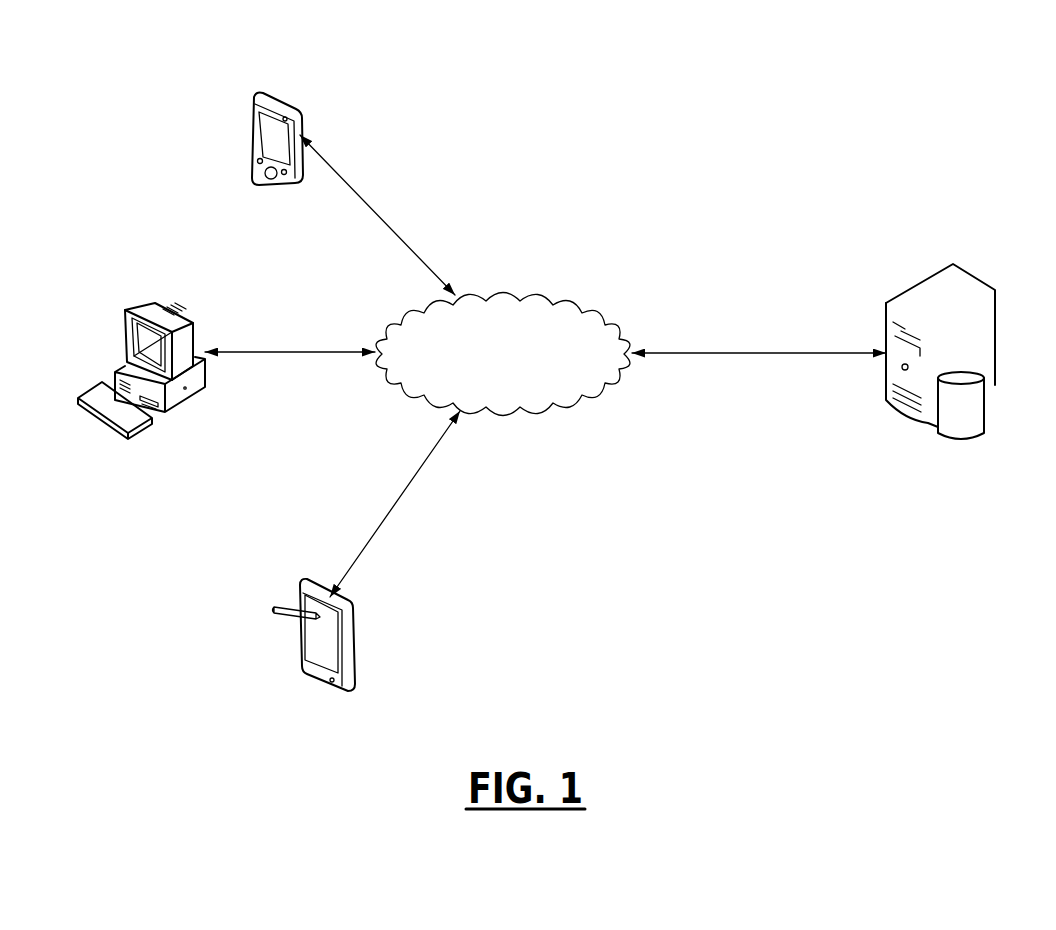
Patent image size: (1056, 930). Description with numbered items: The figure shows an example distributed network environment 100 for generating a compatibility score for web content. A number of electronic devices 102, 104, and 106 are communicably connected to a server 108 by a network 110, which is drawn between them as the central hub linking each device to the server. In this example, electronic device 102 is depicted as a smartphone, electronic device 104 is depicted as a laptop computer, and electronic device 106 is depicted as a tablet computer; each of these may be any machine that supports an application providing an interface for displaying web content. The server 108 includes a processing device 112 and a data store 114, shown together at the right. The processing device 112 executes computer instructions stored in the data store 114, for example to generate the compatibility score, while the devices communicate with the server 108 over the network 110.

The network environment 100 is at (620, 67).
The electronic device 102 is at (295, 107).
The electronic device 104 is at (178, 315).
The electronic device 106 is at (343, 597).
The server 108 is at (882, 441).
The network 110 is at (504, 293).
The processing device 112 is at (977, 275).
The data store 114 is at (983, 437).